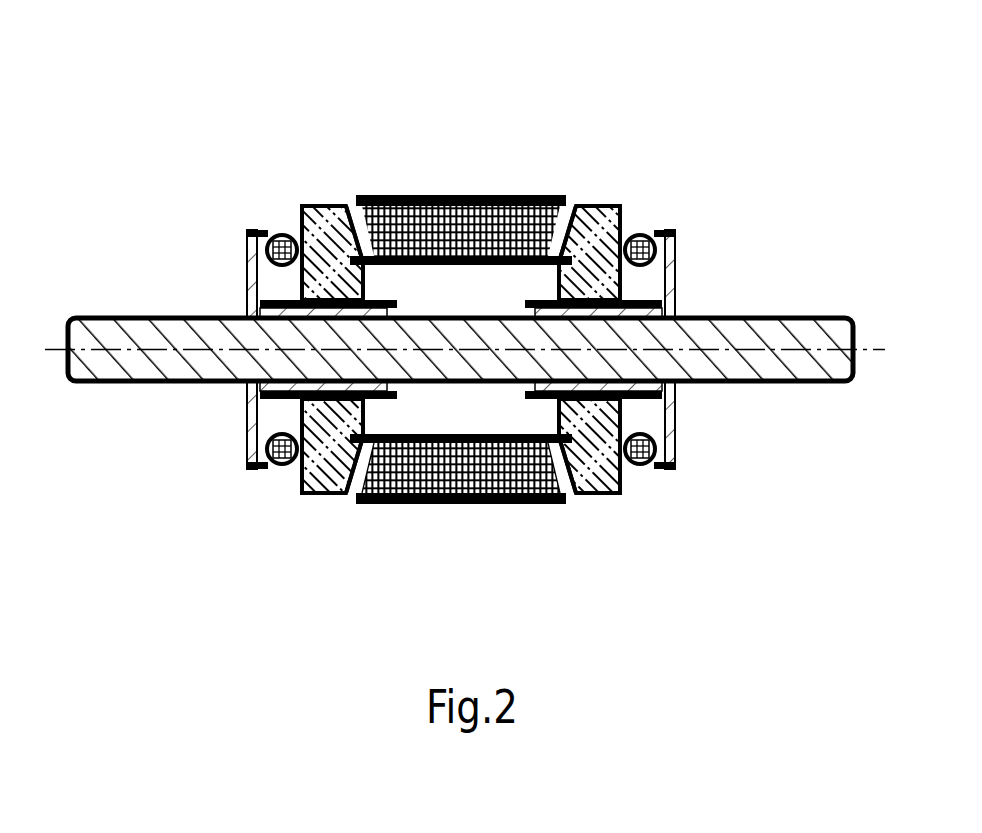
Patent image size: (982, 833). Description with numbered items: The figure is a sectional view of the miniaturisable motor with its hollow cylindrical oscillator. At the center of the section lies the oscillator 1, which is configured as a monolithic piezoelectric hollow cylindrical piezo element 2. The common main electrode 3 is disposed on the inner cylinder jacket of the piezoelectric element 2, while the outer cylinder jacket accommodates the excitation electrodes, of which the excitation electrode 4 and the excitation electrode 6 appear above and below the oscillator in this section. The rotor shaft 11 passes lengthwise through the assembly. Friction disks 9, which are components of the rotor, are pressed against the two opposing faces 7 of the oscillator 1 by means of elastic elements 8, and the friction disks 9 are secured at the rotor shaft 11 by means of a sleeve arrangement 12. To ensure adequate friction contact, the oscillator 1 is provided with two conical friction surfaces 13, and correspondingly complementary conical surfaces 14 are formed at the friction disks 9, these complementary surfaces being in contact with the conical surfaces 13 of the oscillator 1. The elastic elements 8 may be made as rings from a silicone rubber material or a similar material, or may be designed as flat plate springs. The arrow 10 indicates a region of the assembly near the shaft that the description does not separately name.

The oscillator 1 is at (551, 158).
The hollow cylindrical piezo element 2 is at (355, 222).
The common main electrode 3 is at (427, 287).
The excitation electrode 4 is at (459, 192).
The excitation electrode 6 is at (473, 507).
The opposing faces 7 is at (338, 516).
The elastic elements 8 is at (267, 226).
The friction disks 9 is at (312, 220).
The support bar 10 is at (700, 300).
The rotor shaft 11 is at (812, 335).
The sleeve arrangement 12 is at (246, 448).
The conical friction surfaces 13 is at (345, 492).
The complementary conical surfaces 14 is at (327, 498).